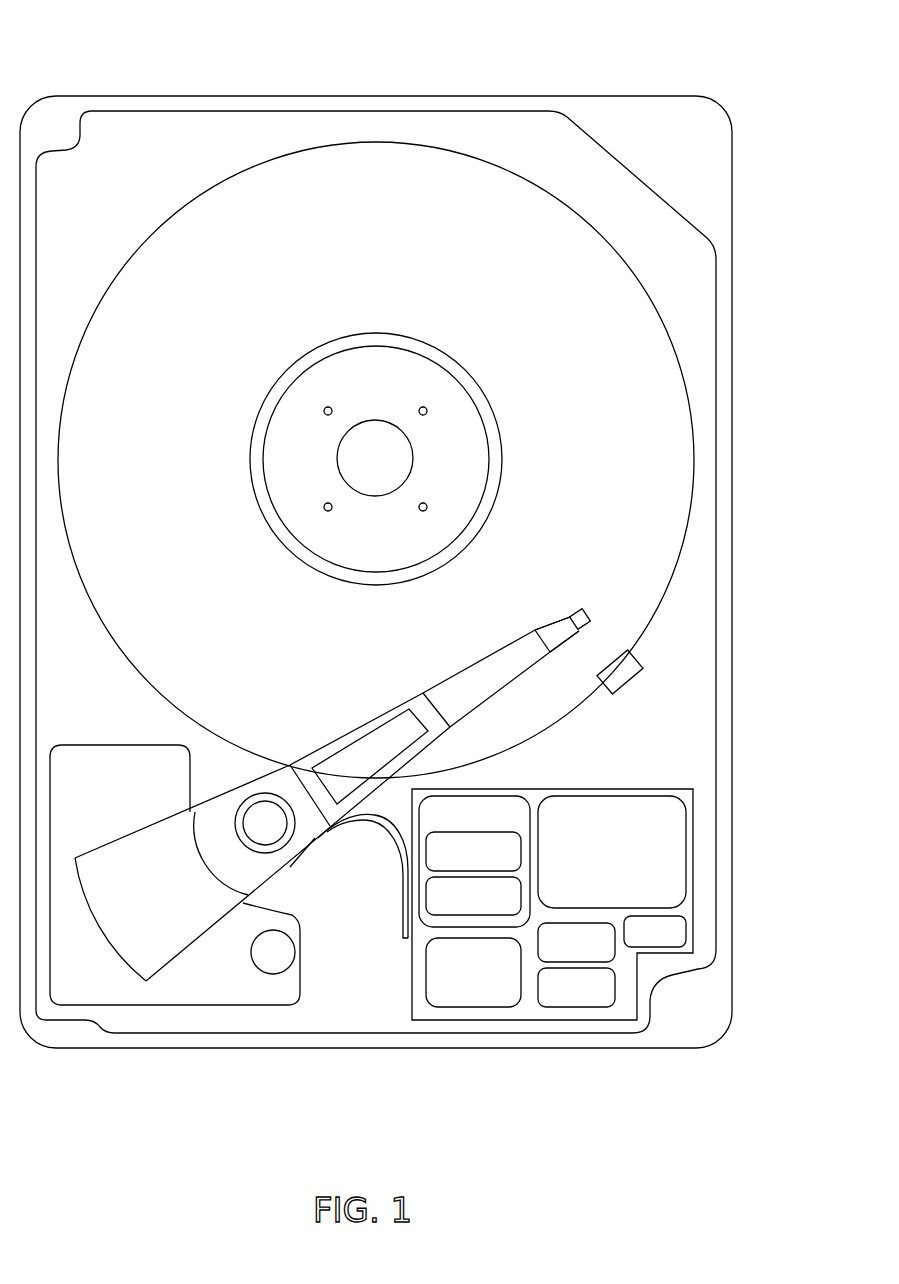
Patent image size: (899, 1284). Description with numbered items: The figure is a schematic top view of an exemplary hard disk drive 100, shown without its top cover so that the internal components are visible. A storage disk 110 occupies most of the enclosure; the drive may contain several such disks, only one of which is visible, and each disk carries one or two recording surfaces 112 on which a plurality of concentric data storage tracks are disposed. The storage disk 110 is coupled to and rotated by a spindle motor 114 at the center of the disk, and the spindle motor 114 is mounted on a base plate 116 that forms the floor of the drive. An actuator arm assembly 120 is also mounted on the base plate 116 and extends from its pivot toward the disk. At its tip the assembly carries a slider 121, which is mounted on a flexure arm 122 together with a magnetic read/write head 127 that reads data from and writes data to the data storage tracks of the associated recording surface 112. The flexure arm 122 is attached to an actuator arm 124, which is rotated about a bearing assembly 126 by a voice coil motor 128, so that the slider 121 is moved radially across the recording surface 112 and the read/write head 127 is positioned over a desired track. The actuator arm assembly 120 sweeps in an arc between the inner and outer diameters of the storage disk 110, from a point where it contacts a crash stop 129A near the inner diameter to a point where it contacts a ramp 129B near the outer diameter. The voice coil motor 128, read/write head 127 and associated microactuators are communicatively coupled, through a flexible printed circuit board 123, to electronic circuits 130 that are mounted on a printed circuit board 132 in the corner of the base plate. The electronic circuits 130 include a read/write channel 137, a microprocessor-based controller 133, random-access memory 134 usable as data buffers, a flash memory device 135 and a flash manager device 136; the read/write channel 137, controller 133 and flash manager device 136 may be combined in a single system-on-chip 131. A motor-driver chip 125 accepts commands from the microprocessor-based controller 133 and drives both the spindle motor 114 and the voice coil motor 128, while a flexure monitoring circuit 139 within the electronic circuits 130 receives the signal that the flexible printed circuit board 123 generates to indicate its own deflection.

The hard disk drive 100 is at (110, 52).
The storage disk 110 is at (152, 238).
The recording surface 112 is at (162, 431).
The spindle motor 114 is at (470, 398).
The base plate 116 is at (717, 597).
The actuator arm assembly 120 is at (318, 695).
The slider 121 is at (590, 610).
The flexure arm 122 is at (550, 623).
The flexible printed circuit board 123 is at (377, 832).
The actuator arm 124 is at (447, 678).
The motor-driver chip 125 is at (473, 972).
The bearing assembly 126 is at (236, 793).
The read/write head 127 is at (578, 585).
The voice coil motor 128 is at (303, 945).
The crash stop 129A is at (273, 975).
The ramp 129B is at (632, 652).
The electronic circuits 130 is at (552, 788).
The system-on-chip 131 is at (474, 861).
The printed circuit board 132 is at (628, 789).
The microprocessor-based controller 133 is at (473, 851).
The random-access memory 134 is at (576, 987).
The flash memory device 135 is at (612, 852).
The flash manager device 136 is at (576, 942).
The read/write channel 137 is at (473, 896).
The flexure monitoring circuit 139 is at (655, 931).